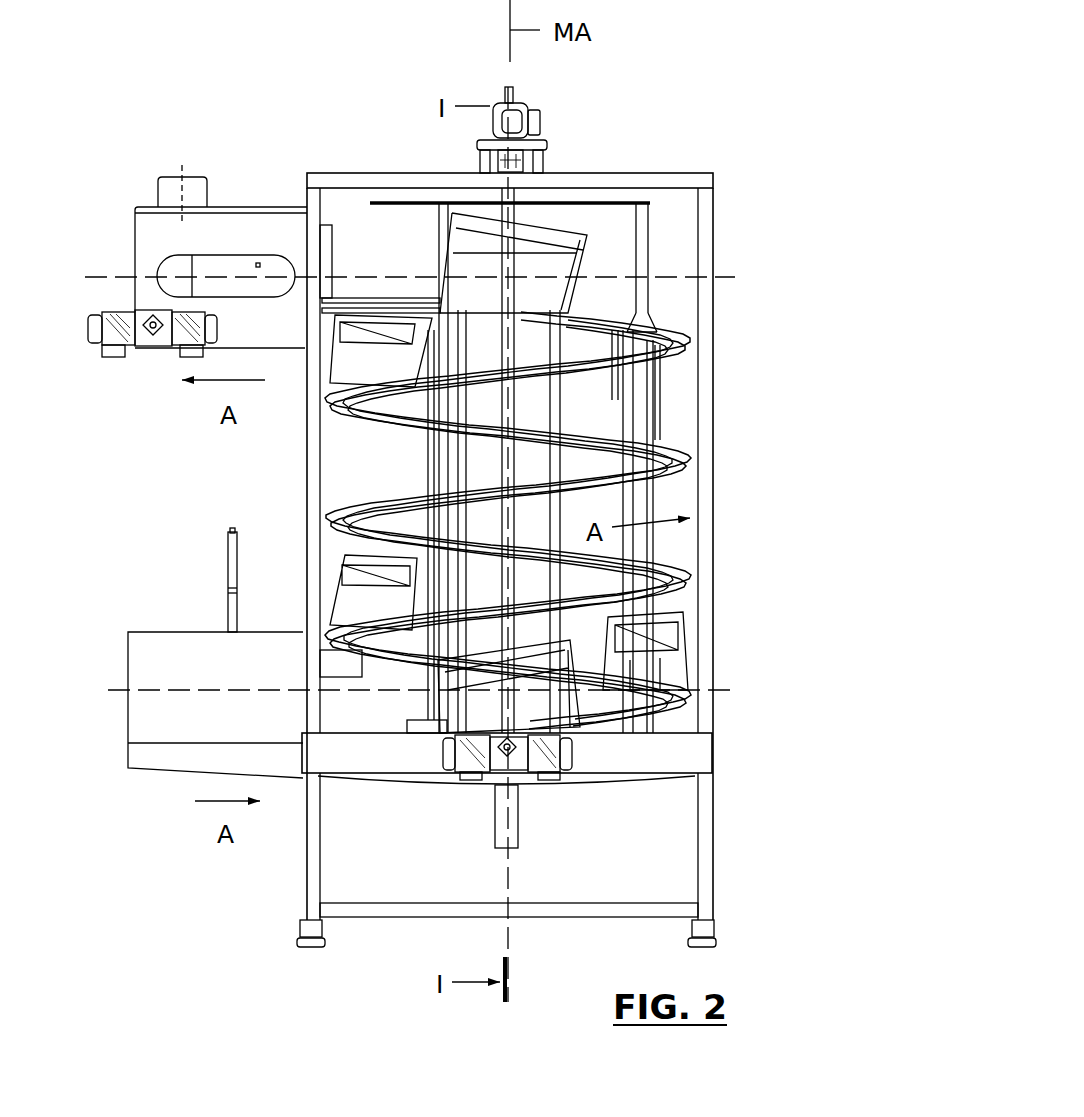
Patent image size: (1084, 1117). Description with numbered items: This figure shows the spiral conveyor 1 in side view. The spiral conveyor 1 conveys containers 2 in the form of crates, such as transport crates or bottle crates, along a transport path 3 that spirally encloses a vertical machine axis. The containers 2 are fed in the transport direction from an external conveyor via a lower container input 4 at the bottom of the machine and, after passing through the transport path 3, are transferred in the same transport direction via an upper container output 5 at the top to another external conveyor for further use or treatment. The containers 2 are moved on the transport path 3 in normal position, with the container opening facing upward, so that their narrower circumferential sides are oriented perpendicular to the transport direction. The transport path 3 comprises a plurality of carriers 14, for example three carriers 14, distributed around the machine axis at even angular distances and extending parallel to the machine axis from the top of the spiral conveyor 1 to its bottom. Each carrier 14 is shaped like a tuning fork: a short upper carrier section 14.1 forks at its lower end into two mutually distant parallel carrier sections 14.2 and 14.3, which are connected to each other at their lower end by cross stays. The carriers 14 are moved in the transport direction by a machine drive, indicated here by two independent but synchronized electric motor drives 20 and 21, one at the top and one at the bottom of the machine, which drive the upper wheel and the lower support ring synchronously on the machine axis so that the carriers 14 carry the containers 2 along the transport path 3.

The spiral conveyor 1 is at (733, 147).
The container 2 is at (545, 705).
The transport path 3 is at (672, 408).
The lower container input 4 is at (171, 789).
The upper container output 5 is at (226, 191).
The carrier 14 is at (665, 502).
The upper carrier section 14.1 is at (643, 240).
The carrier section 14.2 is at (627, 382).
The carrier section 14.3 is at (655, 428).
The drive 20 is at (540, 123).
The drive 21 is at (550, 777).